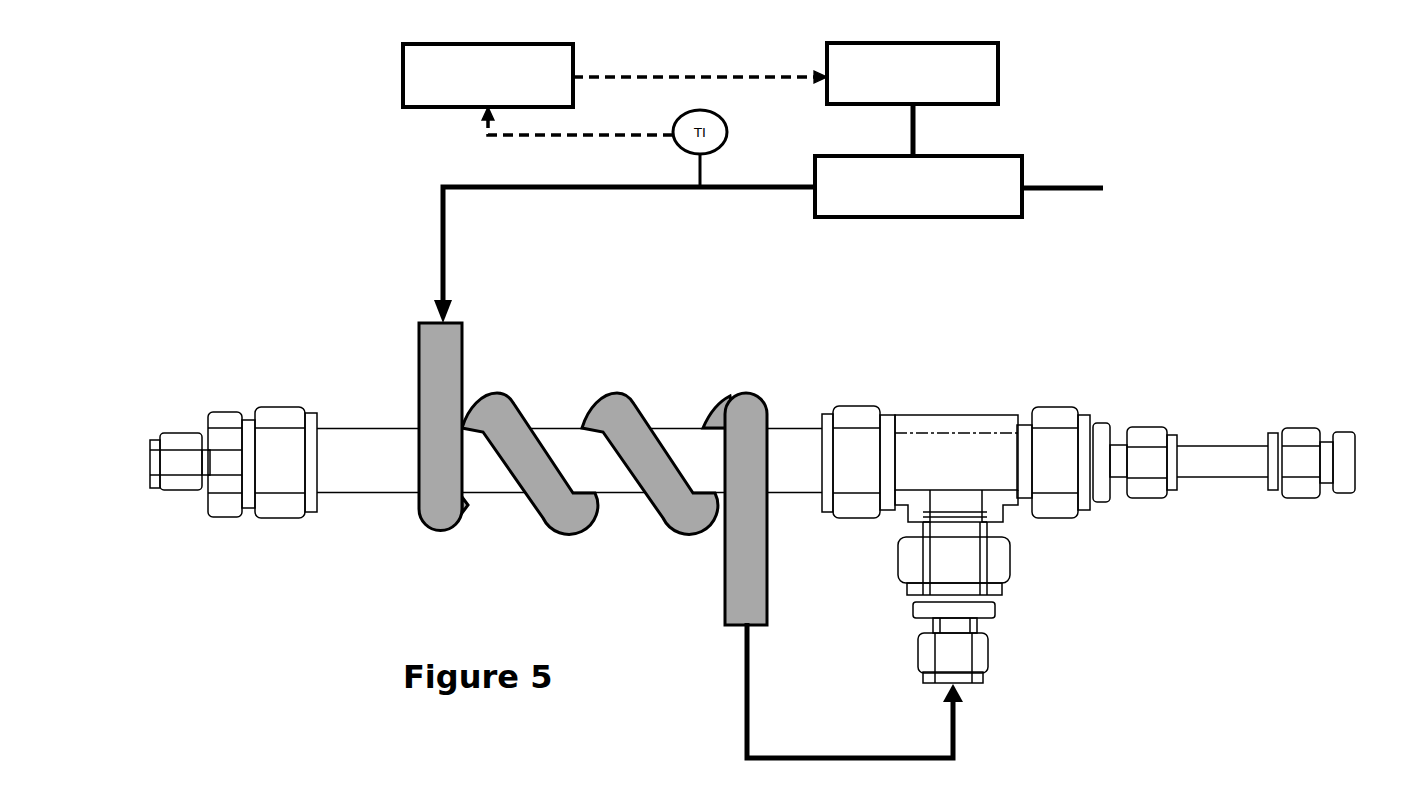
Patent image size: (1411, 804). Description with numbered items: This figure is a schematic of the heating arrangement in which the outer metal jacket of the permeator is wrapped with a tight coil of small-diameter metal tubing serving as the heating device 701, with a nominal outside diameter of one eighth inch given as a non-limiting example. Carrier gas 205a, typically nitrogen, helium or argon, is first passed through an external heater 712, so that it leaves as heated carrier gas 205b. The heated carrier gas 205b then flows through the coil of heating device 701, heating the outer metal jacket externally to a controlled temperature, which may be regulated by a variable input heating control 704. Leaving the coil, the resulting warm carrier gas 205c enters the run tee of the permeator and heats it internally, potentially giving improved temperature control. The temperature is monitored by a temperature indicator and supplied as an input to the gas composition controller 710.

The heating device 701 is at (593, 474).
The variable input heating control 704 is at (912, 73).
The gas composition controller 710 is at (488, 75).
The external heater 712 is at (918, 160).
The carrier gas 205a is at (1105, 189).
The heated carrier gas 205b is at (624, 255).
The warm carrier gas 205c is at (855, 690).